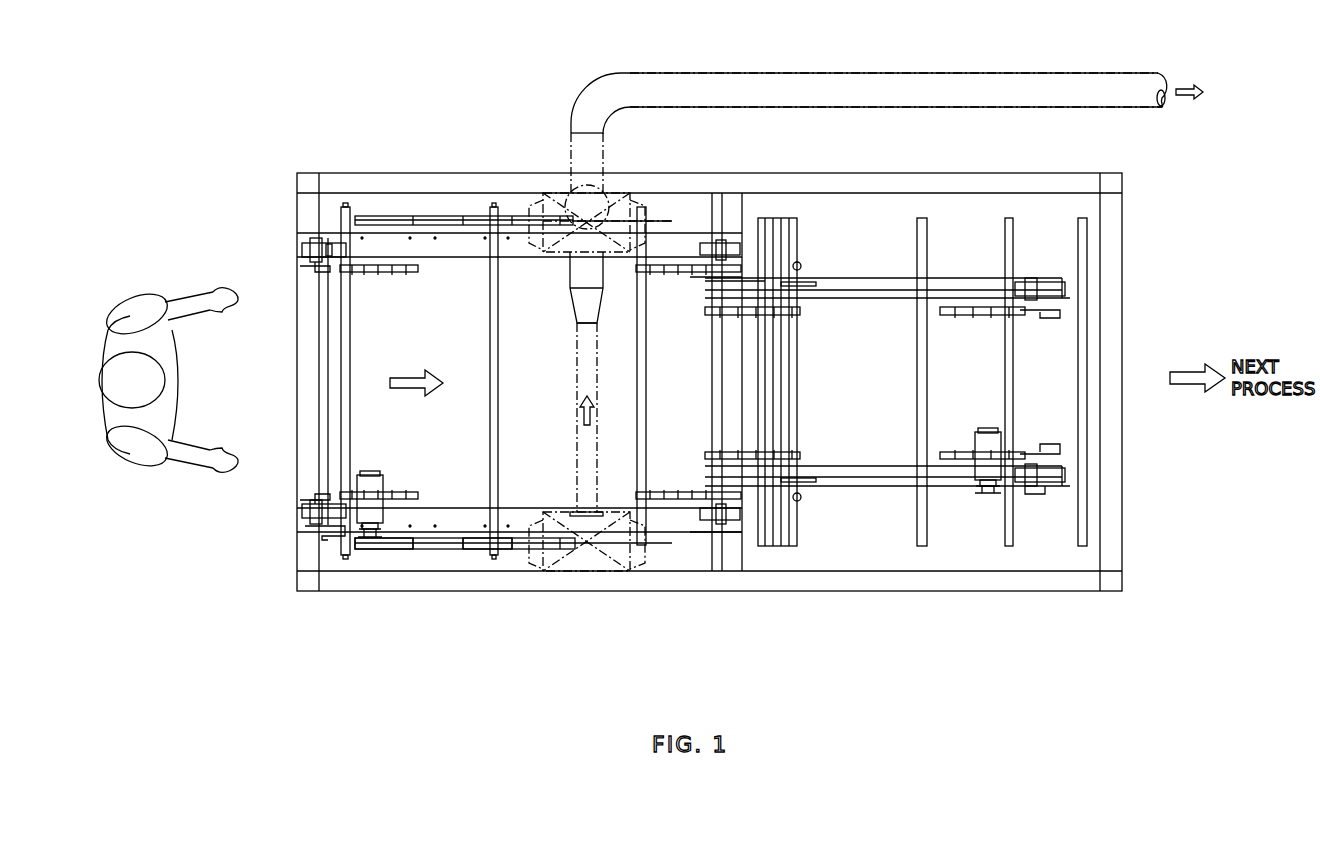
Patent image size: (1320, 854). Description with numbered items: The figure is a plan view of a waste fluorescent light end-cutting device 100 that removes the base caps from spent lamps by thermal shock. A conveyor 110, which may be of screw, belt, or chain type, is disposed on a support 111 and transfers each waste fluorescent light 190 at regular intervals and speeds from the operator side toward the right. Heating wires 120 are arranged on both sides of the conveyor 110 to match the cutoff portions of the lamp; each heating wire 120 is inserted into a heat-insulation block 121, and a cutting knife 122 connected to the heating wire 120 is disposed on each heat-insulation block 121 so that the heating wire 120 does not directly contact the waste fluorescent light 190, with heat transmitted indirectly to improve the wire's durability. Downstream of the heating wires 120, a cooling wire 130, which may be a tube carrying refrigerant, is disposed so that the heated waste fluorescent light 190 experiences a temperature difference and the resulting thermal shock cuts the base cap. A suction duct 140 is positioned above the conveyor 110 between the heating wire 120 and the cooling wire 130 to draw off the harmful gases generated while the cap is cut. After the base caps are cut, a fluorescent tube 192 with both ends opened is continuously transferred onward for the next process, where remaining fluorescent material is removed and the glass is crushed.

The waste fluorescent light end-cutting device 100 is at (368, 95).
The conveyor 110 is at (380, 262).
The support 111 is at (455, 172).
The heating wires 120 is at (437, 550).
The heat-insulation blocks 121 is at (378, 550).
The cutting knife 122 is at (476, 550).
The cooling wires 130 is at (585, 557).
The suction duct 140 is at (673, 108).
The waste fluorescent light 190 is at (500, 287).
The fluorescent tube 192 is at (763, 224).